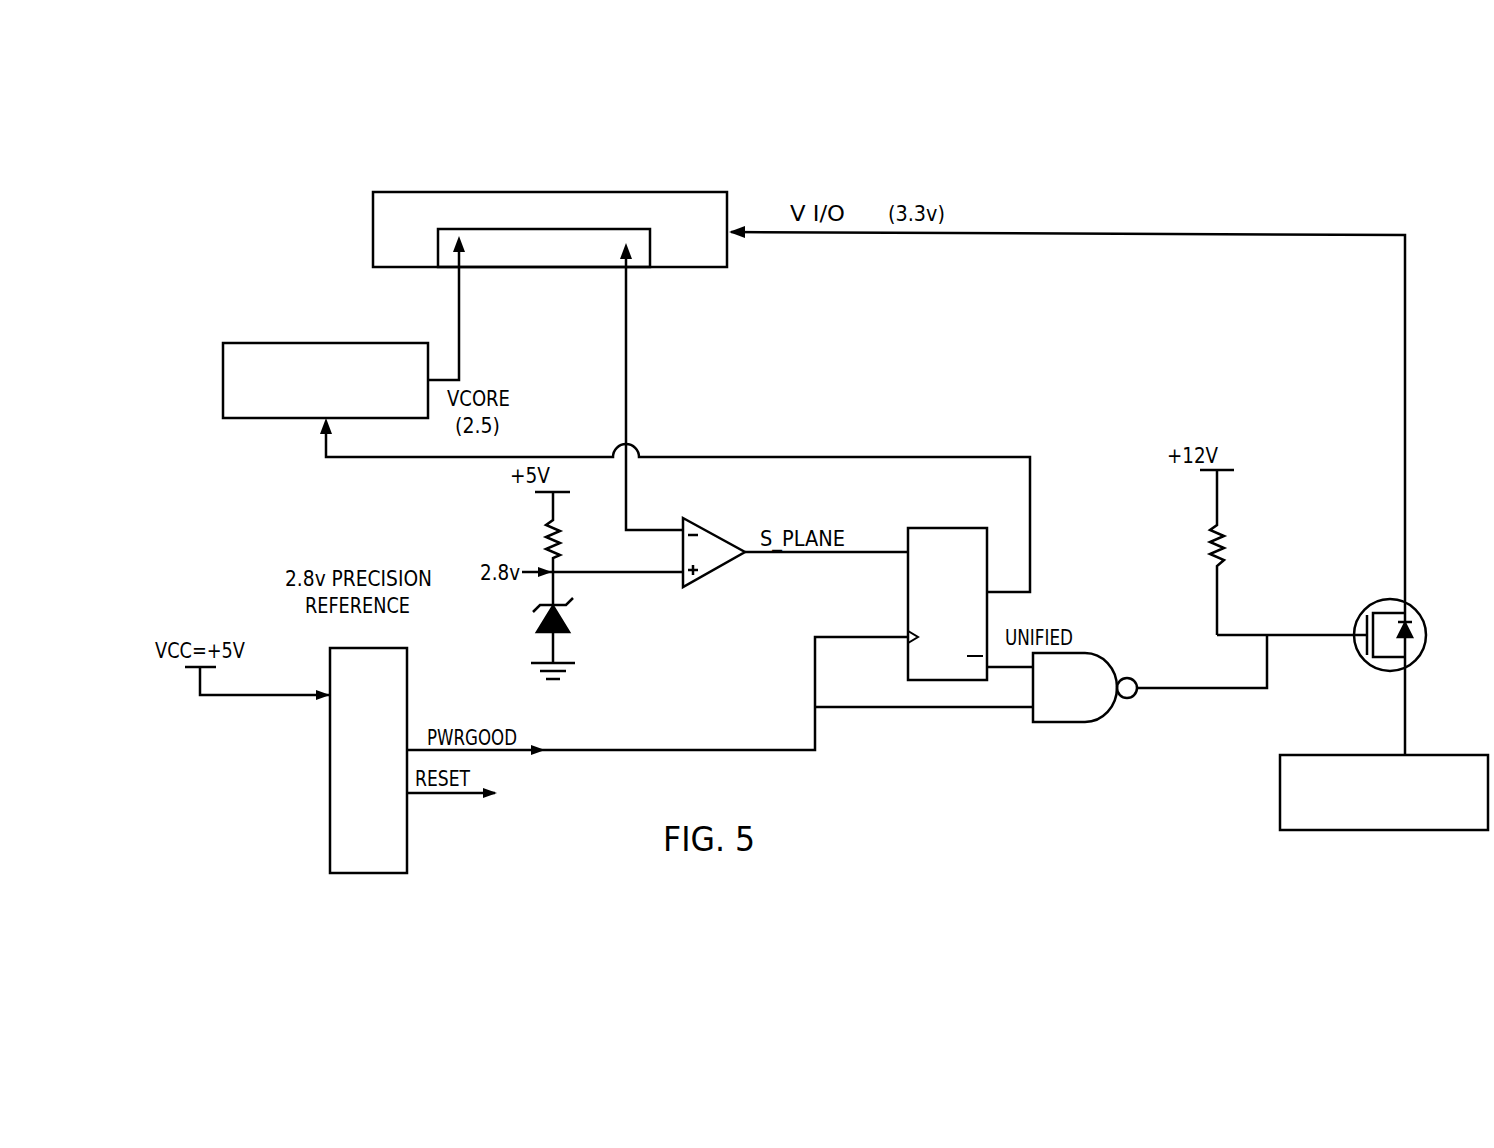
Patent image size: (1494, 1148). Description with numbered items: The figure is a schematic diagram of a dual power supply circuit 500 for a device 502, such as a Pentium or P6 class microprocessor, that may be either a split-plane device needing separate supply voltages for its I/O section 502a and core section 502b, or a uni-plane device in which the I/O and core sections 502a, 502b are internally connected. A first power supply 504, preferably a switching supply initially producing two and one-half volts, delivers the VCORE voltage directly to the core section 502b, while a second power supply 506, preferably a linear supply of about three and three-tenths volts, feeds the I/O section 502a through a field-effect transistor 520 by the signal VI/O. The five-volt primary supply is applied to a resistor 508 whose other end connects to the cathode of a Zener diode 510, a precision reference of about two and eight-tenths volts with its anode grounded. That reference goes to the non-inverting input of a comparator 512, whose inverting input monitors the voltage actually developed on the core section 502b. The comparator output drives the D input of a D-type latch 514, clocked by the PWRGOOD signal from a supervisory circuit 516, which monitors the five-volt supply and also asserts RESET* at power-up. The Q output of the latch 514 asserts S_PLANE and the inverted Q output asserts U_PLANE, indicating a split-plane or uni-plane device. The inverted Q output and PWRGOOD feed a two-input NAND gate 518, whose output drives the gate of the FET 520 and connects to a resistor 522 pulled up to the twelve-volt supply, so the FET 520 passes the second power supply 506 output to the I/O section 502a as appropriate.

The dual power supply circuit 500 is at (296, 520).
The device 502 is at (371, 223).
The I/O section 502a is at (430, 226).
The core section 502b is at (528, 228).
The first power supply 504 is at (278, 342).
The second power supply 506 is at (1311, 833).
The resistor 508 is at (548, 526).
The Zener diode 510 is at (564, 630).
The comparator 512 is at (707, 525).
The D-type latch 514 is at (905, 660).
The supervisory circuit 516 is at (328, 815).
The NAND gate 518 is at (1063, 727).
The field-effect transistor 520 is at (1413, 614).
The resistor 522 is at (1226, 536).